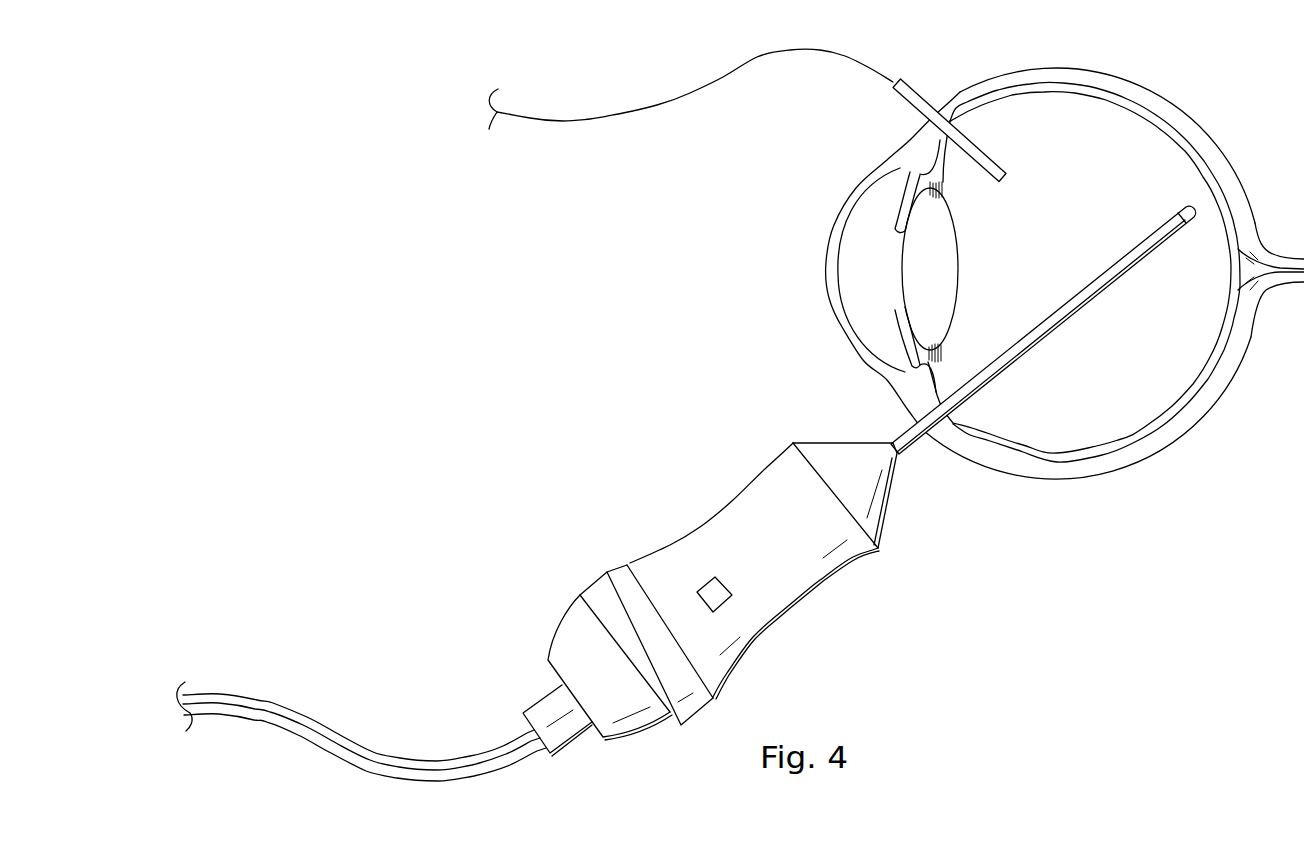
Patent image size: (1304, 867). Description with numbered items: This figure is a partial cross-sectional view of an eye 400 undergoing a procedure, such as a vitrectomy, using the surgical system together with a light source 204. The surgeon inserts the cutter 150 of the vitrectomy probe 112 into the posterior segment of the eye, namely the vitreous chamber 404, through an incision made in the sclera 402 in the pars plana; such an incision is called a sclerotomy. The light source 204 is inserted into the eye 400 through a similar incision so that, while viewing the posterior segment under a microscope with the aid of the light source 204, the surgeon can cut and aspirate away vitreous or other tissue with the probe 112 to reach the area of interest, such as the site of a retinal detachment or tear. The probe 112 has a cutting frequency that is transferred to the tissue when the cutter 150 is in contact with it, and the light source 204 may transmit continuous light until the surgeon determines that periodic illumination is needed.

The probe 112 is at (803, 655).
The cutter 150 is at (1070, 317).
The light source 204 is at (997, 162).
The eye 400 is at (1065, 282).
The sclera 402 is at (1066, 470).
The vitreous chamber 404 is at (1094, 121).